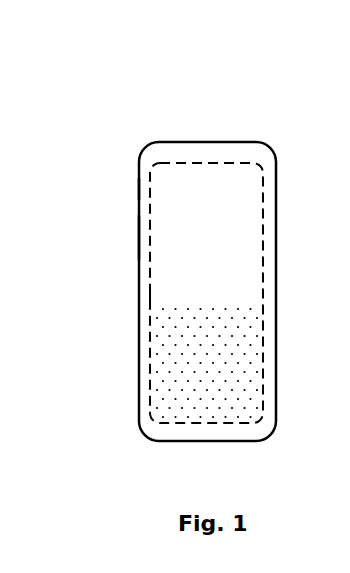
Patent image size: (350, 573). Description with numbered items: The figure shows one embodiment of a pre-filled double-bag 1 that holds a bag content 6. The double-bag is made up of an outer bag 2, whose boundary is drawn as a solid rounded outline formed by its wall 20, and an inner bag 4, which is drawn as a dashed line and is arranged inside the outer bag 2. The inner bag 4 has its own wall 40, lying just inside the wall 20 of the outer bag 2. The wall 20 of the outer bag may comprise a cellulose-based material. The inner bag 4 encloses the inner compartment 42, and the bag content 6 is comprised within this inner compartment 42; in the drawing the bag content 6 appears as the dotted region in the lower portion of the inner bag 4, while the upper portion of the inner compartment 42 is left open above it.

The pre-filled double-bag 1 is at (208, 92).
The outer bag 2 is at (138, 215).
The wall 20 is at (130, 172).
The inner bag 4 is at (150, 292).
The wall 40 is at (142, 243).
The inner compartment 42 is at (198, 242).
The bag content 6 is at (183, 355).